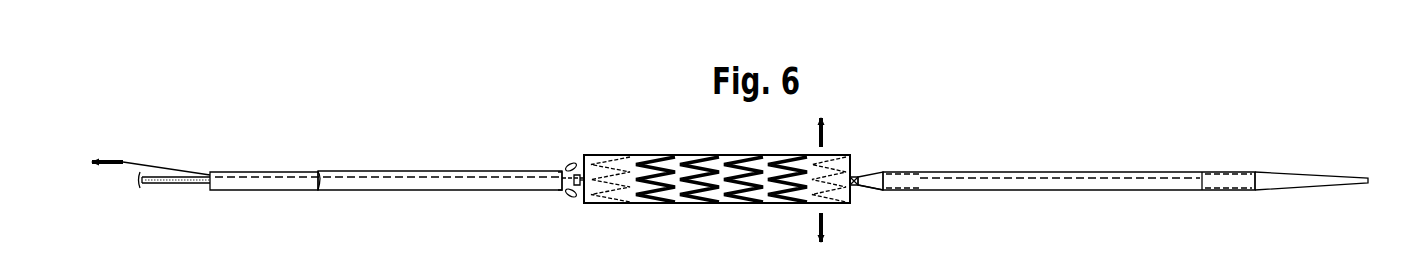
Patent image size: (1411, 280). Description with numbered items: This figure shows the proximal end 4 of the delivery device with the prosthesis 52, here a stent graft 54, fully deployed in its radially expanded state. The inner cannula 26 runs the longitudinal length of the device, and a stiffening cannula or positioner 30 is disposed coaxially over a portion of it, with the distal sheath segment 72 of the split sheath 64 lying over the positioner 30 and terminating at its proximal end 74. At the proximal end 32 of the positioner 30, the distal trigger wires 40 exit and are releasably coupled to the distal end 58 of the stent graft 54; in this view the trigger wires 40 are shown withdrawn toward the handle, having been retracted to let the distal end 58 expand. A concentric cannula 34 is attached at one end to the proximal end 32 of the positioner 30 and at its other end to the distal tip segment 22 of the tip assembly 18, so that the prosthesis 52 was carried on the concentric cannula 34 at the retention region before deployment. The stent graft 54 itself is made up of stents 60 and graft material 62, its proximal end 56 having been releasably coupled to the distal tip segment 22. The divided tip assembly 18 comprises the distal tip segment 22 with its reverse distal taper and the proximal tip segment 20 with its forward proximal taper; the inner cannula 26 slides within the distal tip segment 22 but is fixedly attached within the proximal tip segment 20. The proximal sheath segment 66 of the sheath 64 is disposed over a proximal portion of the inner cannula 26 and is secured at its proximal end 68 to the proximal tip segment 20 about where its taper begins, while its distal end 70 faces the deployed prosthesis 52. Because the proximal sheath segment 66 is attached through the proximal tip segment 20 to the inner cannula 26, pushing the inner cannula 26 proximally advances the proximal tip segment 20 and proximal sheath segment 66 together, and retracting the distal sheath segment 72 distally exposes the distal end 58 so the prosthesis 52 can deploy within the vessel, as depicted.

The proximal end 4 is at (1360, 141).
The tip assembly 18 is at (1267, 163).
The proximal tip segment 20 is at (1333, 185).
The distal tip segment 22 is at (875, 173).
The inner cannula 26 is at (158, 184).
The positioner 30 is at (275, 192).
The proximal end of the positioner 32 is at (563, 164).
The concentric cannula 34 is at (577, 175).
The distal trigger wires 40 is at (173, 165).
The prosthesis 52 is at (717, 186).
The stent graft 54 is at (717, 186).
The proximal end of the stent graft 56 is at (844, 212).
The distal end of the stent graft 58 is at (590, 212).
The stents 60 is at (653, 160).
The graft material 62 is at (717, 162).
The sheath 64 is at (786, 159).
The proximal sheath segment 66 is at (1070, 171).
The proximal end of the proximal sheath segment 68 is at (1249, 163).
The distal end of the proximal sheath segment 70 is at (893, 199).
The distal sheath segment 72 is at (467, 171).
The proximal end of the distal sheath segment 74 is at (554, 196).